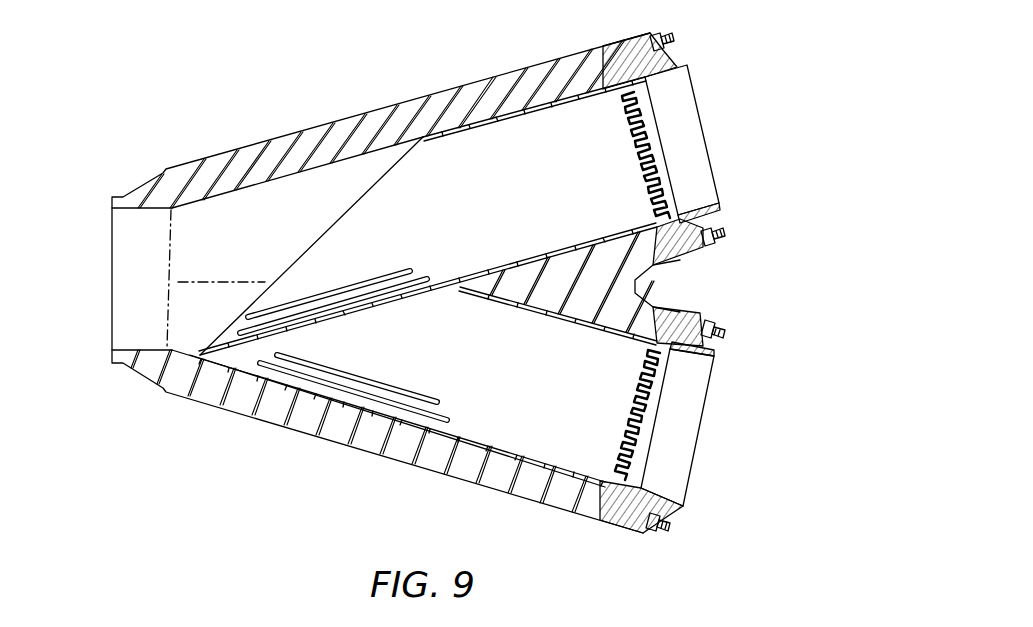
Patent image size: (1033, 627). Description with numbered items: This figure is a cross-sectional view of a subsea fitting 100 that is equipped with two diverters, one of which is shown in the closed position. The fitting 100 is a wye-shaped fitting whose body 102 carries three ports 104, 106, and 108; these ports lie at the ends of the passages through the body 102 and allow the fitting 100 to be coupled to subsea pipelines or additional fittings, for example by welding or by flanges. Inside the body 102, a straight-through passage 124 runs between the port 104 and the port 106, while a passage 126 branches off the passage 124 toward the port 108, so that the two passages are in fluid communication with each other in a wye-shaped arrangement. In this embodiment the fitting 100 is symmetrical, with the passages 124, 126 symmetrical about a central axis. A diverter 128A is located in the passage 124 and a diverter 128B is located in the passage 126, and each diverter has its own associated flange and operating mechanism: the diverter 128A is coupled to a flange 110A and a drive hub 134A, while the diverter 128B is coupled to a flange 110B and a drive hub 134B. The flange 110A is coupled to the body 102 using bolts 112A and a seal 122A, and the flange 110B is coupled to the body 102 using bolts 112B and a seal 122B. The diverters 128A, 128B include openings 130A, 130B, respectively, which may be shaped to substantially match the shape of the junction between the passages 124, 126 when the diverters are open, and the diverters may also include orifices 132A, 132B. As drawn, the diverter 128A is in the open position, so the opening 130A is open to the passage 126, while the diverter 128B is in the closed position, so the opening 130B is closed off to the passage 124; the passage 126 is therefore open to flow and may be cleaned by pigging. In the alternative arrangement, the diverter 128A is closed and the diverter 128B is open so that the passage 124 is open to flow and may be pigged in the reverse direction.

The fitting 100 is at (200, 115).
The body 102 is at (360, 117).
The port 104 is at (701, 430).
The port 106 is at (110, 280).
The port 108 is at (700, 118).
The flange 110A is at (617, 524).
The flange 110B is at (673, 62).
The bolts 112A is at (718, 330).
The bolts 112B is at (716, 245).
The seal 122A is at (610, 494).
The seal 122B is at (613, 68).
The passage 124 is at (591, 399).
The passage 126 is at (461, 199).
The diverter 128A is at (583, 325).
The diverter 128B is at (557, 252).
The opening 130A is at (375, 315).
The opening 130B is at (304, 181).
The orifices 132A is at (425, 395).
The orifices 132B is at (335, 290).
The drive hub 134A is at (632, 490).
The drive hub 134B is at (655, 205).